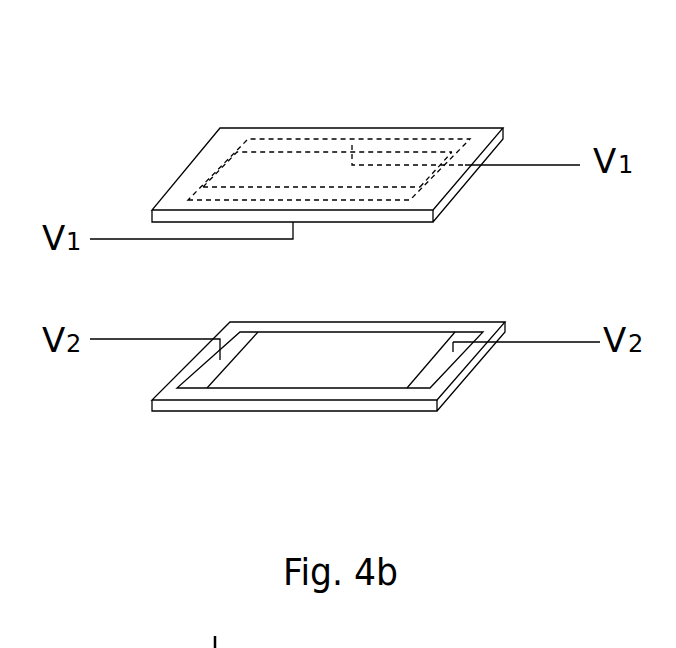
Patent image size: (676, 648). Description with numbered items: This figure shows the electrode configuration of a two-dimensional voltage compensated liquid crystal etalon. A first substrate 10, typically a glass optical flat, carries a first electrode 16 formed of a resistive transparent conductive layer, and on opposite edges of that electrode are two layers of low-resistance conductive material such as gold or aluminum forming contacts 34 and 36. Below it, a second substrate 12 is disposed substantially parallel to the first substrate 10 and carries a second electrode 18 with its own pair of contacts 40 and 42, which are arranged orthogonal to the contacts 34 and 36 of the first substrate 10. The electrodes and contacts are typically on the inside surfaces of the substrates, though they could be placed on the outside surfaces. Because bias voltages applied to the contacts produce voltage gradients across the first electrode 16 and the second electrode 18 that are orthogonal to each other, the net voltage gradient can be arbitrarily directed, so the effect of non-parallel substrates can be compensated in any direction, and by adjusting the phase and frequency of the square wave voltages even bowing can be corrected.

The first substrate 10 is at (425, 128).
The second substrate 12 is at (332, 407).
The first electrode 16 is at (256, 170).
The second electrode 18 is at (370, 347).
The contact 34 is at (378, 188).
The contact 36 is at (333, 150).
The contact 40 is at (200, 376).
The contact 42 is at (432, 368).